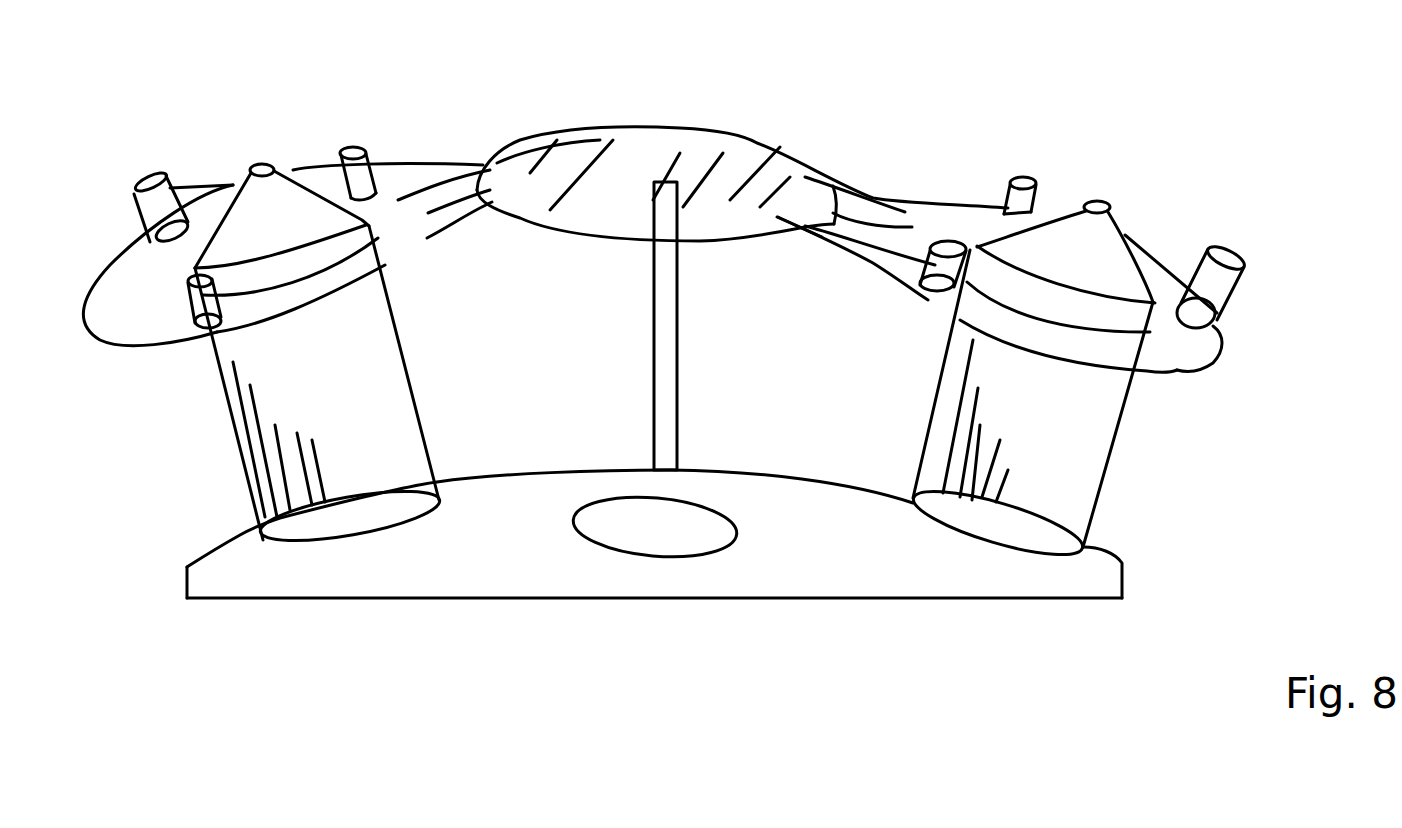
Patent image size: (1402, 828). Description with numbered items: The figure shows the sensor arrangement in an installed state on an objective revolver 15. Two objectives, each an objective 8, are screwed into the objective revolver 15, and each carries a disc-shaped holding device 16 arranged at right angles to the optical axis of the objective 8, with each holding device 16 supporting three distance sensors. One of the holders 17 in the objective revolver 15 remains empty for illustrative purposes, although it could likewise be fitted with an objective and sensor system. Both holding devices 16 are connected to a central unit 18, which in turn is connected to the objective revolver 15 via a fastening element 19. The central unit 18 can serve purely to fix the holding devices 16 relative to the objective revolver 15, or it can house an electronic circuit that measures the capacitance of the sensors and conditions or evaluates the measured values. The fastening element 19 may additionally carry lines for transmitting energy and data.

The objective 8 is at (378, 418).
The objective revolver 15 is at (1102, 587).
The holding device 16 is at (383, 240).
The holder 17 is at (642, 551).
The central unit 18 is at (748, 165).
The fastening element 19 is at (663, 370).